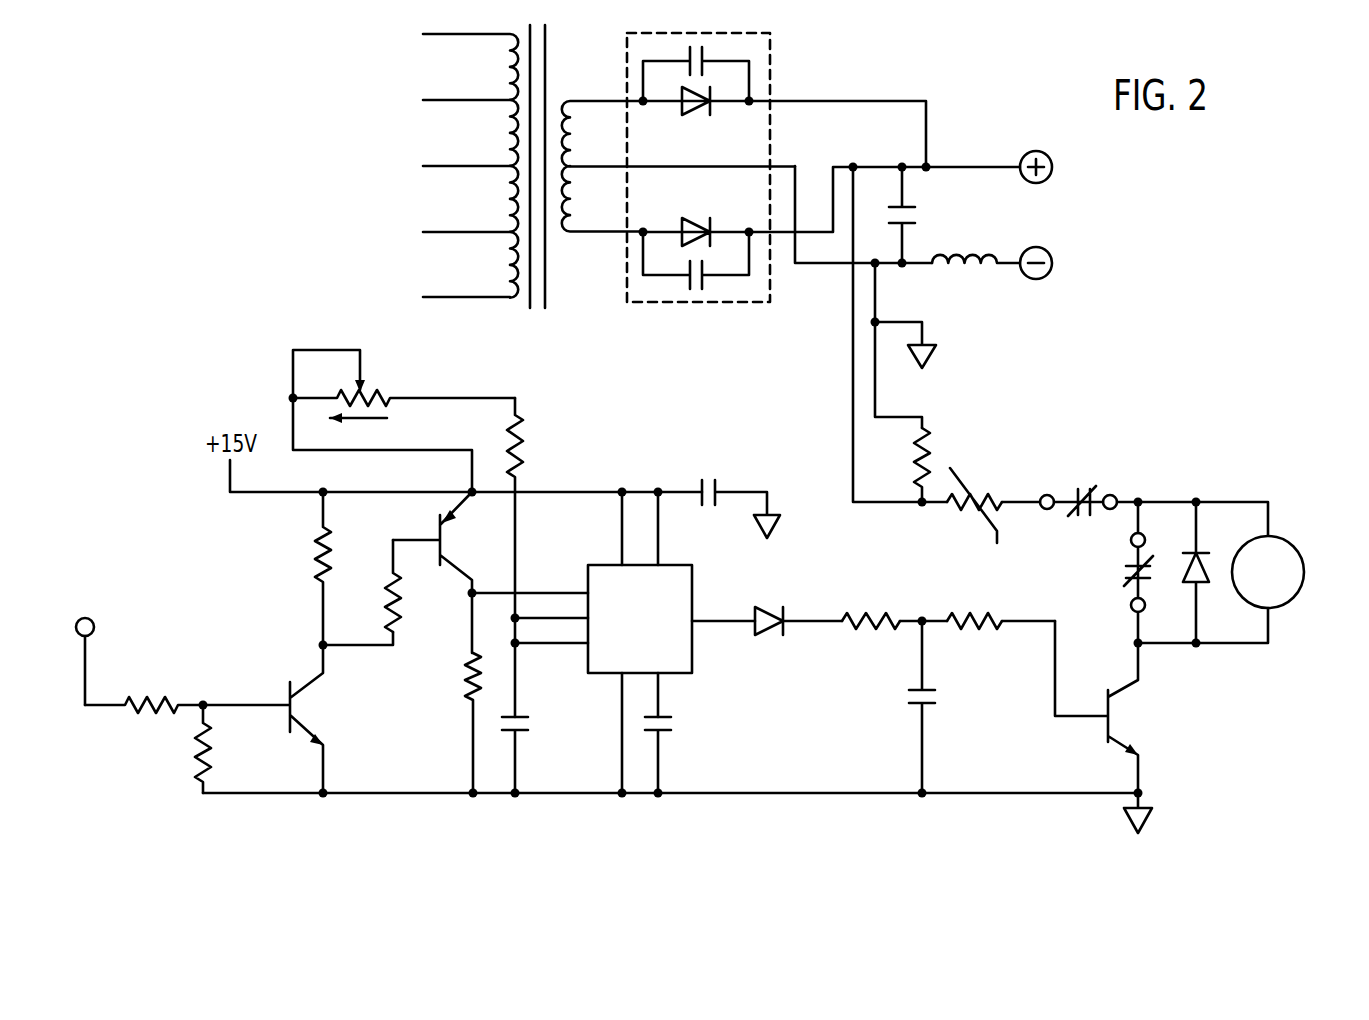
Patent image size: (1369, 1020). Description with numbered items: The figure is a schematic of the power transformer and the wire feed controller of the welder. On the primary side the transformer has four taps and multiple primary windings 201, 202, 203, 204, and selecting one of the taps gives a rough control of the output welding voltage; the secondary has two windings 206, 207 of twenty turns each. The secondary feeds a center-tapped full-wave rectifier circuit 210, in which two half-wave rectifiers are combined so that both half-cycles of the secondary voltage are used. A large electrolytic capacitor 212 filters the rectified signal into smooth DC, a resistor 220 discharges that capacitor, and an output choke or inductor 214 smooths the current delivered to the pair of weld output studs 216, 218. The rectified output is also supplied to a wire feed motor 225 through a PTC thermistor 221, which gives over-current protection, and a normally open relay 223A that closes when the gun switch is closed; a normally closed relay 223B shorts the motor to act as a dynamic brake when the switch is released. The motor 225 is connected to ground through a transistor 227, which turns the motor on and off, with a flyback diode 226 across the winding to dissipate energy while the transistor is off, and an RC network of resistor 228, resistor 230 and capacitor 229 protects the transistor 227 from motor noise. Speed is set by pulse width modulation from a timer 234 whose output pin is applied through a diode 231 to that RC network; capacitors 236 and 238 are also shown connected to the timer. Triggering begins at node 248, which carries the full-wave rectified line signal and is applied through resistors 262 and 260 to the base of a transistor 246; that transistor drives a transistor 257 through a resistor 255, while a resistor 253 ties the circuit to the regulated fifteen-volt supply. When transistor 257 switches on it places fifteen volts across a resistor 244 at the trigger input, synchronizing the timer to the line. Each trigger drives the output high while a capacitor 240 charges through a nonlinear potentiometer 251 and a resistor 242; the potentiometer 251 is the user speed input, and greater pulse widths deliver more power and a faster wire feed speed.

The primary winding 201 is at (508, 65).
The primary winding 202 is at (508, 131).
The primary winding 203 is at (508, 196).
The primary winding 204 is at (508, 262).
The secondary winding 206 is at (574, 109).
The secondary winding 207 is at (572, 231).
The center-tapped full-wave rectifier circuit 210 is at (745, 33).
The electrolytic capacitor 212 is at (908, 216).
The output choke (inductor) 214 is at (980, 269).
The weld output stud 216 is at (1053, 167).
The weld output stud 218 is at (1053, 263).
The resistor 220 is at (927, 448).
The thermistor (PTC) 221 is at (980, 498).
The normally open relay 223A is at (1090, 488).
The normally closed relay 223B is at (1125, 567).
The wire feed motor 225 is at (1297, 553).
The flyback diode 226 is at (1204, 586).
The transistor 227 is at (1120, 739).
The resistor 228 is at (998, 614).
The capacitor 229 is at (930, 700).
The resistor 230 is at (888, 614).
The diode 231 is at (768, 636).
The LM555 timer 234 is at (692, 590).
The capacitor 236 is at (718, 487).
The capacitor 238 is at (666, 722).
The capacitor 240 is at (524, 722).
The resistor 242 is at (521, 446).
The resistor 244 is at (466, 692).
The transistor 246 is at (286, 698).
The node 248 is at (92, 620).
The nonlinear potentiometer 251 is at (394, 393).
The resistor 253 is at (315, 555).
The resistor 255 is at (401, 618).
The transistor 257 is at (455, 562).
The resistor 260 is at (212, 745).
The resistor 262 is at (166, 699).